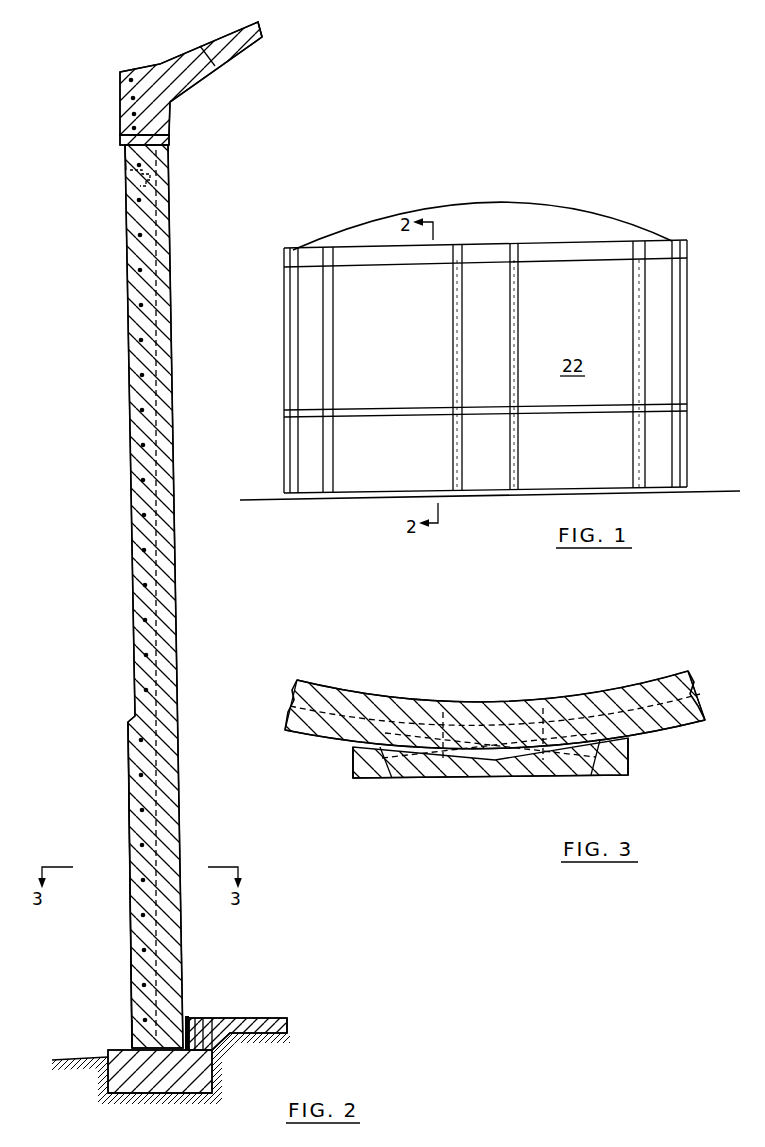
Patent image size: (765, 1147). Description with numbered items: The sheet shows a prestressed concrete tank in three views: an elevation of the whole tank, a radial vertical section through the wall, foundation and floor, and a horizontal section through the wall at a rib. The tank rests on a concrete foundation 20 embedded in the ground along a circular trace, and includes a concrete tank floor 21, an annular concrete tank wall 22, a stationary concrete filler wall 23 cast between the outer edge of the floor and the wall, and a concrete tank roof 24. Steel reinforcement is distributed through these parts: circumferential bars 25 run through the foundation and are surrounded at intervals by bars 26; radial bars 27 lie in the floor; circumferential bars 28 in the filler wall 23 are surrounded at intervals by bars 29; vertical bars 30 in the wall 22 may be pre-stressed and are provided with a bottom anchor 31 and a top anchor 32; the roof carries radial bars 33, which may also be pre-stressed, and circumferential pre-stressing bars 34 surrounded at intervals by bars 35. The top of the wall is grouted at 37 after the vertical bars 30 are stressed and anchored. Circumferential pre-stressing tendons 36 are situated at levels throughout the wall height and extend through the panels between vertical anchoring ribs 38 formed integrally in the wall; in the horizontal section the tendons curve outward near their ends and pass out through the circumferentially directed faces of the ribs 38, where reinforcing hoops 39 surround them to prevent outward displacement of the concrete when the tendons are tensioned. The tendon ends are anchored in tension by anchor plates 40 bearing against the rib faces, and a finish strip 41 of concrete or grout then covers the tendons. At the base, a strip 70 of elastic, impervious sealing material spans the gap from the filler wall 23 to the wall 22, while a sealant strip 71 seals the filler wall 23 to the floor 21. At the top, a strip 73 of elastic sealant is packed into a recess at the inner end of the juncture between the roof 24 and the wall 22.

In FIG. 2, the concrete foundation 20 is at (214, 1080).
In FIG. 2, the concrete tank floor 21 is at (262, 1018).
In FIG. 2, the annular concrete tank wall 22 is at (137, 640).
In FIG. 1, the annular concrete tank wall 22 is at (678, 320).
In FIG. 3, the annular concrete tank wall 22 is at (314, 736).
In FIG. 2, the stationary concrete filler wall 23 is at (197, 1018).
In FIG. 2, the concrete tank roof 24 is at (240, 52).
In FIG. 1, the concrete tank roof 24 is at (542, 214).
In FIG. 2, the circumferential foundation bars 25 is at (178, 1094).
In FIG. 2, the foundation surrounding bars 26 is at (136, 1094).
In FIG. 2, the radial floor bars 27 is at (288, 1030).
In FIG. 2, the circumferential filler wall bars 28 is at (206, 1018).
In FIG. 2, the filler wall surrounding bars 29 is at (222, 1046).
In FIG. 2, the vertical wall bars 30 is at (160, 757).
In FIG. 2, the bottom anchor 31 is at (134, 1029).
In FIG. 2, the top anchor 32 is at (136, 181).
In FIG. 2, the radial roof bars 33 is at (210, 70).
In FIG. 2, the circumferential roof bars 34 is at (120, 83).
In FIG. 2, the roof surrounding bars 35 is at (120, 106).
In FIG. 2, the circumferential pre-stressing tendons 36 is at (140, 753).
In FIG. 3, the circumferential pre-stressing tendons 36 is at (700, 702).
In FIG. 2, the grout 37 is at (126, 154).
In FIG. 1, the vertical anchoring ribs 38 is at (506, 310).
In FIG. 3, the vertical anchoring ribs 38 is at (498, 779).
In FIG. 3, the reinforcing hoops 39 is at (444, 712).
In FIG. 3, the anchor plates 40 is at (391, 779).
In FIG. 1, the finish strip 41 is at (456, 340).
In FIG. 3, the finish strip 41 is at (353, 760).
In FIG. 2, the sealing strip 70 is at (188, 1016).
In FIG. 2, the sealant strip 71 is at (214, 1020).
In FIG. 2, the sealant strip 73 is at (170, 143).